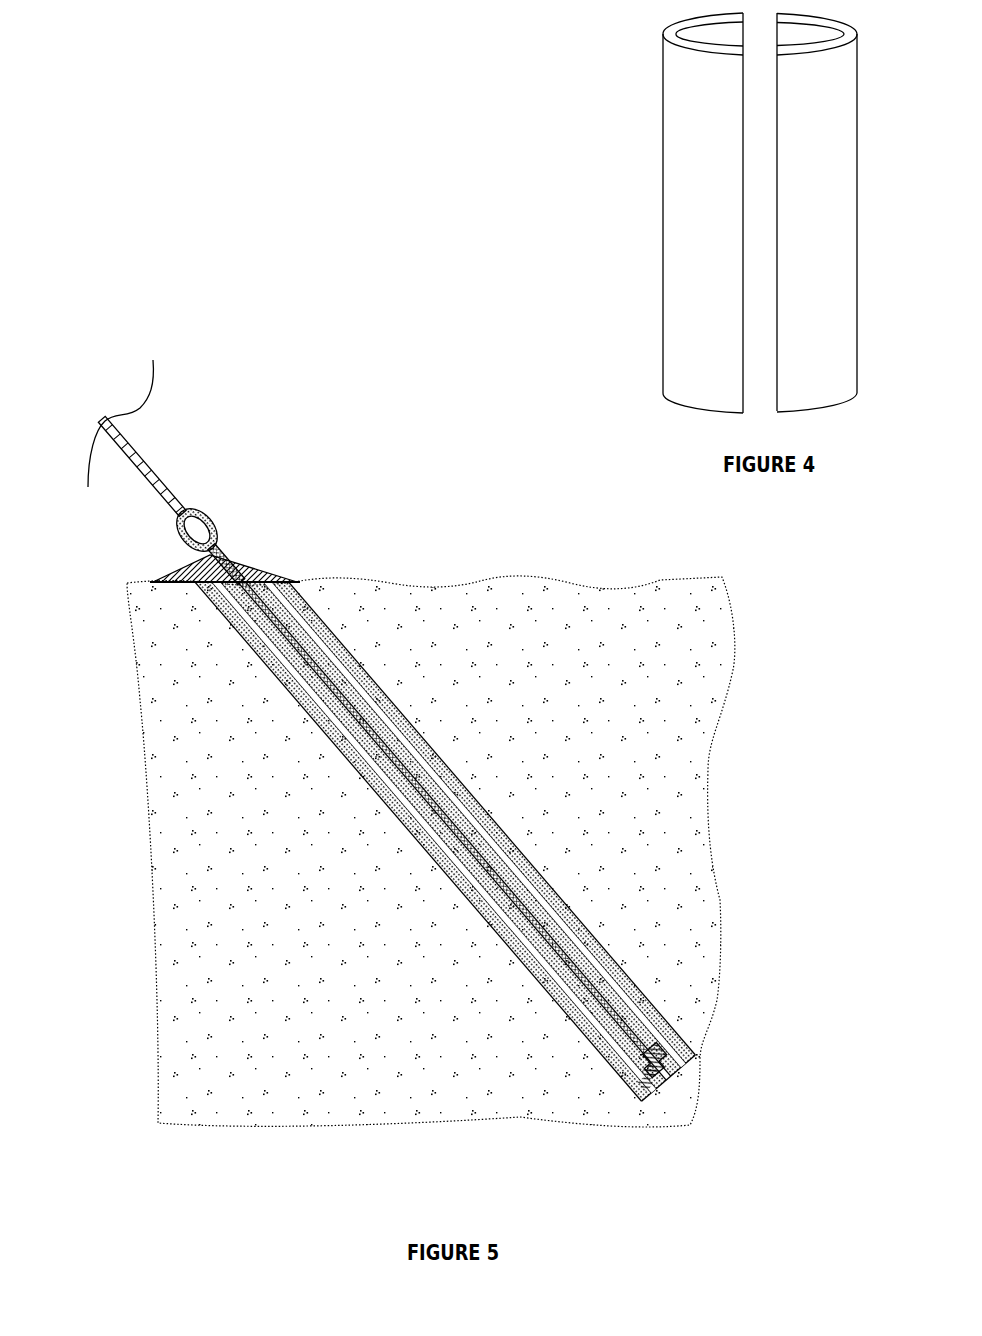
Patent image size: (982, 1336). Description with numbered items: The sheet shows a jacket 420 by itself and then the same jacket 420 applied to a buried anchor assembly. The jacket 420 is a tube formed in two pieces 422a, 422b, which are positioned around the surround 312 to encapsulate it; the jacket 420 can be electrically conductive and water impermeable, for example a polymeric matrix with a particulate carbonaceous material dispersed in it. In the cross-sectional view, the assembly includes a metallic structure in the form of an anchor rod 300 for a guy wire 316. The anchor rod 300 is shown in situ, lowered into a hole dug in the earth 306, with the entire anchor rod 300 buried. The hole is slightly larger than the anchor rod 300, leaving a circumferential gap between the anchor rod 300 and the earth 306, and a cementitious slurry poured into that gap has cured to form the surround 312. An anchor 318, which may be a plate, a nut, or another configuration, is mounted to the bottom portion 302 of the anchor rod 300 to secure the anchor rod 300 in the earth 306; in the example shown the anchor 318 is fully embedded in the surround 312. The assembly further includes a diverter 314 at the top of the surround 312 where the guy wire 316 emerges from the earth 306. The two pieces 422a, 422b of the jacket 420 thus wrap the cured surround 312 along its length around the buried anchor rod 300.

In FIG. 5, the anchor rod 300 is at (496, 811).
In FIG. 5, the bottom portion 302 is at (428, 798).
In FIG. 5, the earth 306 is at (290, 970).
In FIG. 5, the surround 312 is at (439, 811).
In FIG. 5, the diverter 314 is at (260, 563).
In FIG. 5, the guy wire 316 is at (165, 483).
In FIG. 5, the anchor 318 is at (651, 1066).
In FIG. 4, the jacket 420 is at (676, 213).
In FIG. 5, the jacket 420 is at (439, 811).
In FIG. 4, the first piece 422a is at (698, 278).
In FIG. 5, the first piece 422a is at (424, 824).
In FIG. 4, the second piece 422b is at (804, 329).
In FIG. 5, the second piece 422b is at (453, 799).